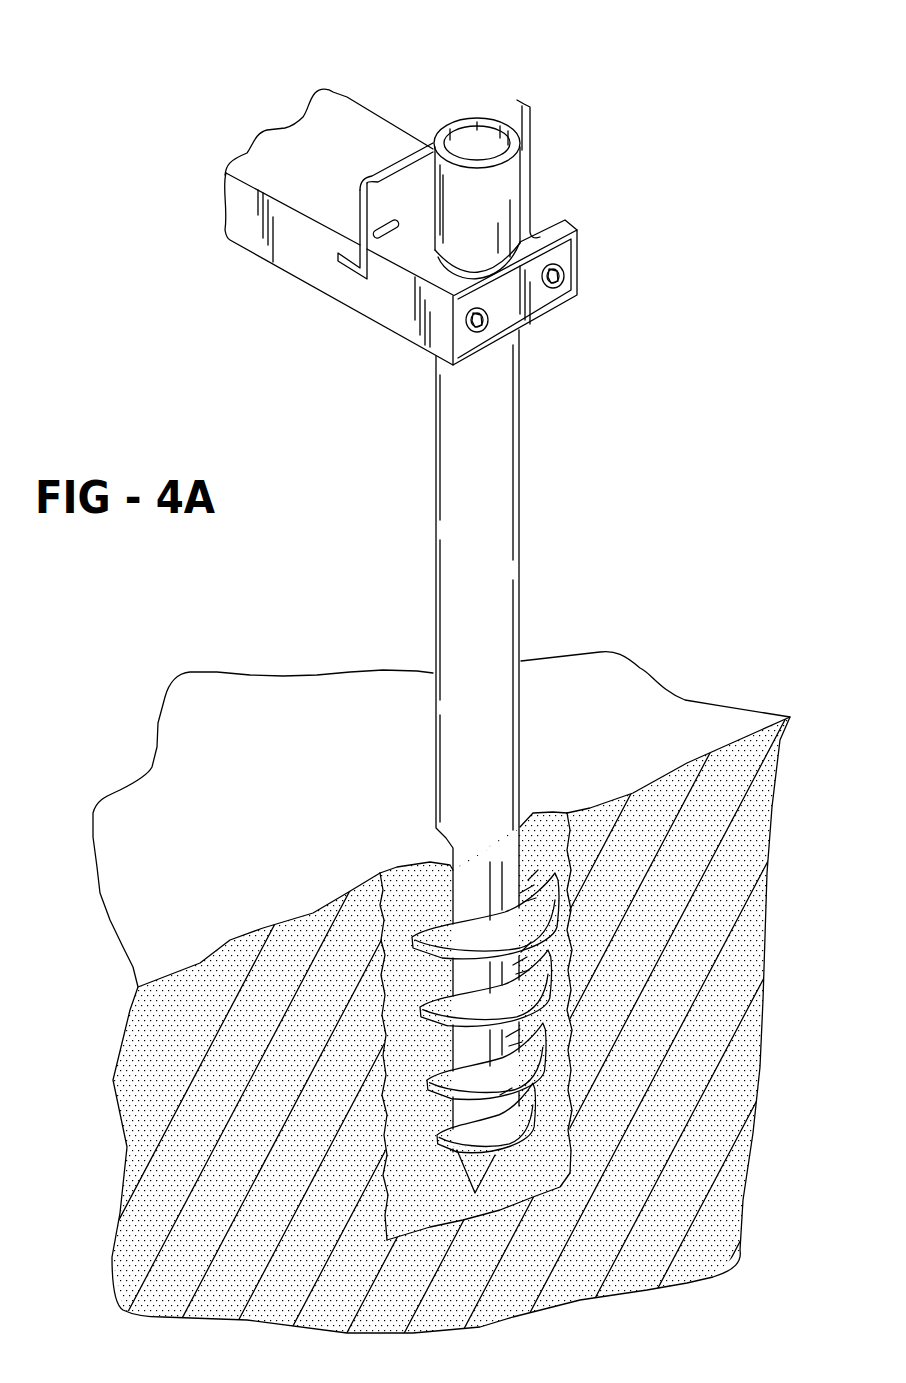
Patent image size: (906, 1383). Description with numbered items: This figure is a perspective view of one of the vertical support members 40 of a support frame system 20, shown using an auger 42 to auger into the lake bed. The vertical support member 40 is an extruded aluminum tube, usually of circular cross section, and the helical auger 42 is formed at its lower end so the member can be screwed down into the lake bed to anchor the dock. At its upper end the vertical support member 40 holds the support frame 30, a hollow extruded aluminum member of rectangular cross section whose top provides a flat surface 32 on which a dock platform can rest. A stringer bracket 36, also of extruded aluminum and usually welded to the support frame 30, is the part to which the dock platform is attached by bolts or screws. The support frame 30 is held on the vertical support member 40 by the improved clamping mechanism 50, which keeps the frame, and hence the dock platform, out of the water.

The support frame system 20 is at (448, 183).
The support frame 30 is at (330, 268).
The flat surface 32 is at (356, 132).
The stringer bracket 36 is at (495, 86).
The vertical support member 40 is at (492, 380).
The auger 42 is at (477, 933).
The clamping mechanism 50 is at (532, 230).